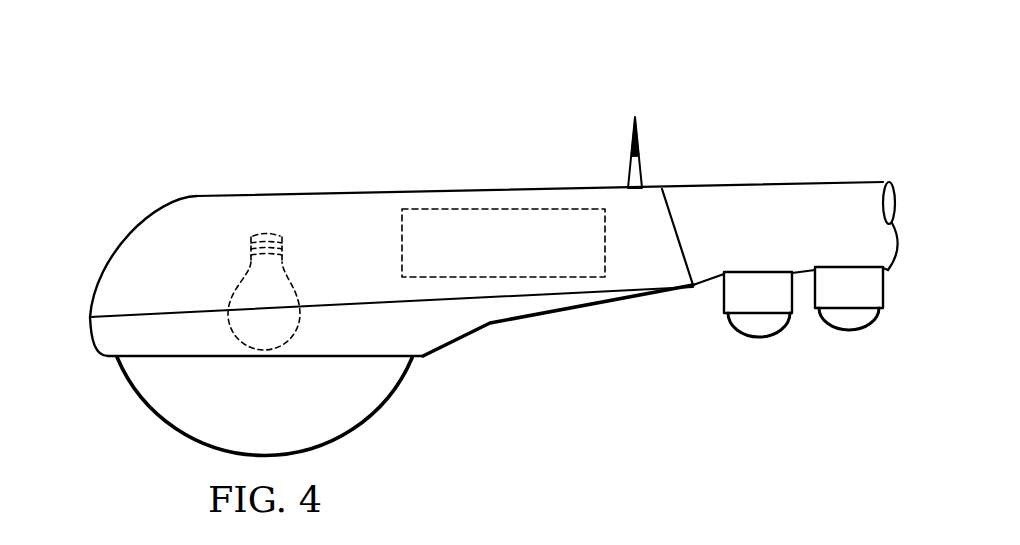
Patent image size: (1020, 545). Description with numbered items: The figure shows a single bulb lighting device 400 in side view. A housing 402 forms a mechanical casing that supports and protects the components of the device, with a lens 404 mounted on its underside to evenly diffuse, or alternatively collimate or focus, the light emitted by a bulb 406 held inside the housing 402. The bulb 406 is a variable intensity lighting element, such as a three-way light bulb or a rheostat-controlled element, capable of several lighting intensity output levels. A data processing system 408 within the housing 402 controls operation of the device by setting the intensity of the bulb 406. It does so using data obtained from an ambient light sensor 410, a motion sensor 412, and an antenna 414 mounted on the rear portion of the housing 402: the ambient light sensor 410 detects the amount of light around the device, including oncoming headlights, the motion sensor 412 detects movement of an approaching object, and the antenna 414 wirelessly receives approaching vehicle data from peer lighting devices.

The single bulb lighting device 400 is at (403, 111).
The housing 402 is at (127, 240).
The lens 404 is at (154, 410).
The bulb 406 is at (265, 232).
The data processing system 408 is at (511, 209).
The ambient light sensor 410 is at (849, 331).
The motion sensor 412 is at (757, 336).
The antenna 414 is at (640, 140).